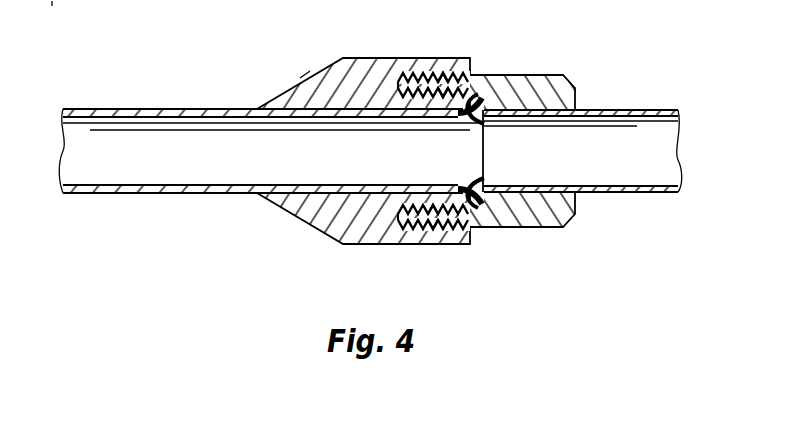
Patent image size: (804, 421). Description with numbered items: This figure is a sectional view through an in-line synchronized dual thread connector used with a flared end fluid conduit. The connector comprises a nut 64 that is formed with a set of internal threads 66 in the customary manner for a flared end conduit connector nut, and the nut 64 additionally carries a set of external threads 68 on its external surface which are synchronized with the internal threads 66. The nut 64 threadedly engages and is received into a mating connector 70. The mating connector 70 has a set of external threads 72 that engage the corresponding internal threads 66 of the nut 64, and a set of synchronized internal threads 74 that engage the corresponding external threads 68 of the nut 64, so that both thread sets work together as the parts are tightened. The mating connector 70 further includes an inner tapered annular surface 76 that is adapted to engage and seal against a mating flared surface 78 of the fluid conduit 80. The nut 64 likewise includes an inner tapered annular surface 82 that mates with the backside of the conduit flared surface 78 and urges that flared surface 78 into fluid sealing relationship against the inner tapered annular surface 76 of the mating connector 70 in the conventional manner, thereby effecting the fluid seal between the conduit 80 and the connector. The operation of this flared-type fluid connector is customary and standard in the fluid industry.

The nut 64 is at (572, 90).
The internal threads 66 is at (447, 75).
The external threads 68 is at (405, 73).
The mating connector 70 is at (306, 77).
The external threads 72 is at (405, 243).
The internal threads 74 is at (432, 244).
The inner tapered annular surface 76 is at (481, 96).
The flared surface 78 is at (481, 206).
The fluid conduit 80 is at (634, 192).
The inner tapered annular surface 82 is at (509, 96).